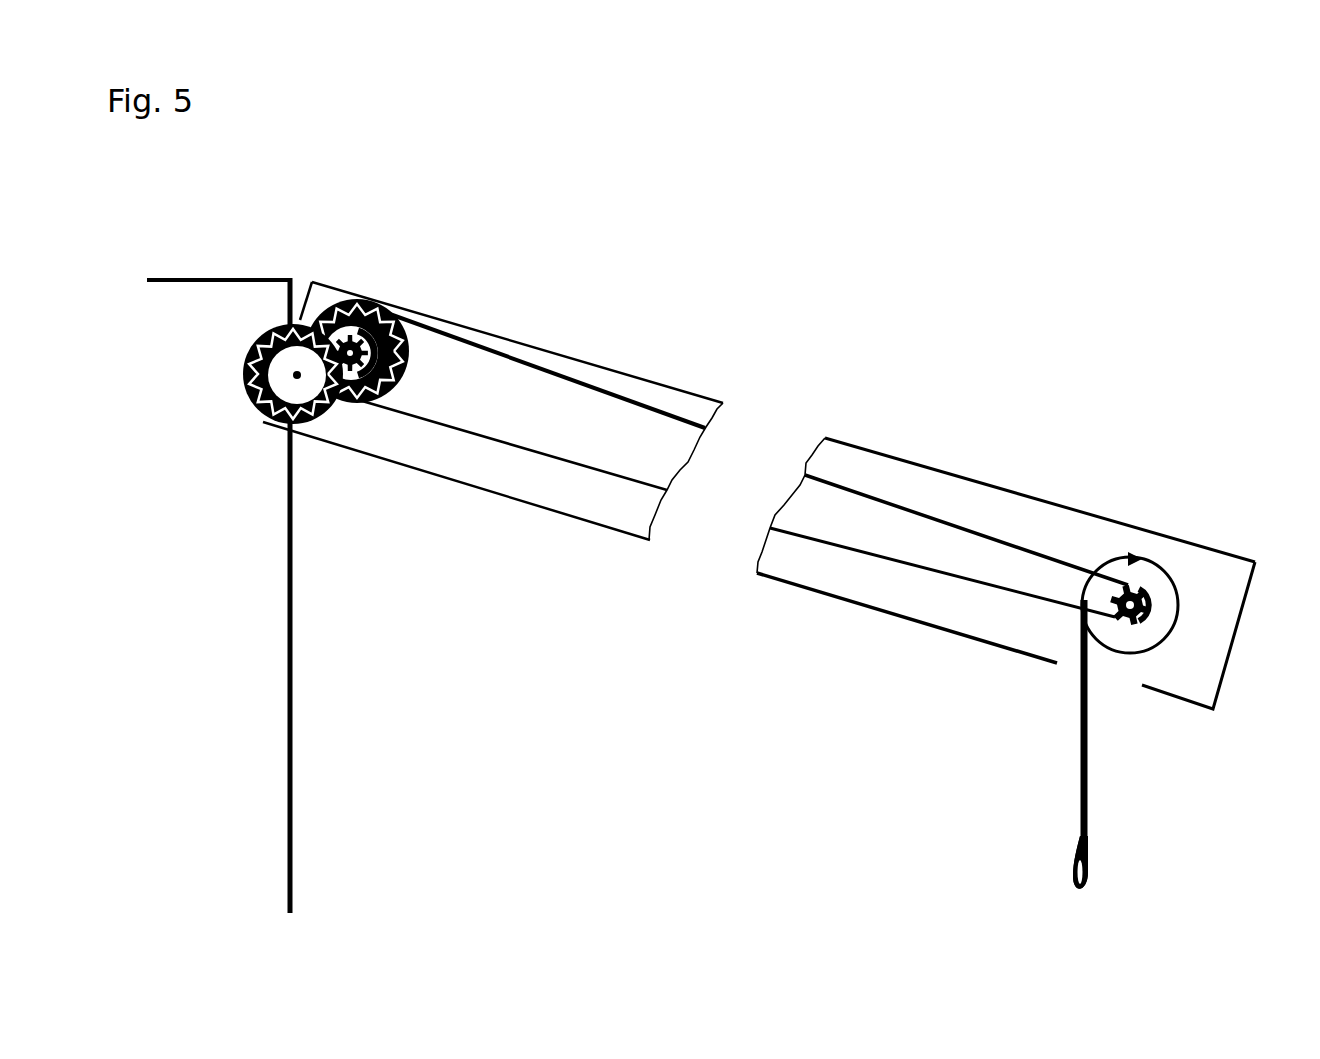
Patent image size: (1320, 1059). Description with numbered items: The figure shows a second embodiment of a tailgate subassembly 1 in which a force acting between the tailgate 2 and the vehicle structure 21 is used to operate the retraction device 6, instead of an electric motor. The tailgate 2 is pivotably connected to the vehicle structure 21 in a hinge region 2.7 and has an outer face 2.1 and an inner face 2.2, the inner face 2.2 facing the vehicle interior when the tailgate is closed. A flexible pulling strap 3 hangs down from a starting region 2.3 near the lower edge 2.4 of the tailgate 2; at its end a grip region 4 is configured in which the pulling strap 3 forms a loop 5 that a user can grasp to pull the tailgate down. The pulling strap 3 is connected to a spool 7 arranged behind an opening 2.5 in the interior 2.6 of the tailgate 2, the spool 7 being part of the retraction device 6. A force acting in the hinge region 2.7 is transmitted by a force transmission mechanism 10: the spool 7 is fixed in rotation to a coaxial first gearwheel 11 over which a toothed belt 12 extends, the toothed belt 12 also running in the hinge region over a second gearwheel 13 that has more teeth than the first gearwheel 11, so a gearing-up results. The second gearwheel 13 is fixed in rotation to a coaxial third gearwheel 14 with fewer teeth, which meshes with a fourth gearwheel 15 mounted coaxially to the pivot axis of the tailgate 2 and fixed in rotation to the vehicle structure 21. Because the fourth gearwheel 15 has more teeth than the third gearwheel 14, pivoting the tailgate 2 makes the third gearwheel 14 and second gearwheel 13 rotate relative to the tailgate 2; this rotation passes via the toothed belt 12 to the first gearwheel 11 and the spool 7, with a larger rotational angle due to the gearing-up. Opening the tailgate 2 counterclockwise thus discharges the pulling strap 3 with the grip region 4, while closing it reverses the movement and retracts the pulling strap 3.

The tailgate subassembly 1 is at (681, 246).
The tailgate 2 is at (924, 552).
The outer face 2.1 is at (713, 382).
The inner face 2.2 is at (775, 590).
The starting region 2.3 is at (907, 618).
The lower edge 2.4 is at (1260, 679).
The opening 2.5 is at (1056, 682).
The interior 2.6 is at (1058, 516).
The hinge region 2.7 is at (313, 266).
The pulling strap 3 is at (1081, 728).
The grip region 4 is at (1062, 864).
The loop 5 is at (1080, 862).
The retraction device 6 is at (968, 421).
The spool 7 is at (1147, 573).
The force transmission mechanism 10 is at (860, 436).
The first gearwheel 11 is at (1147, 593).
The toothed belt 12 is at (566, 385).
The second gearwheel 13 is at (380, 316).
The third gearwheel 14 is at (368, 300).
The fourth gearwheel 15 is at (317, 432).
The vehicle structure 21 is at (235, 278).